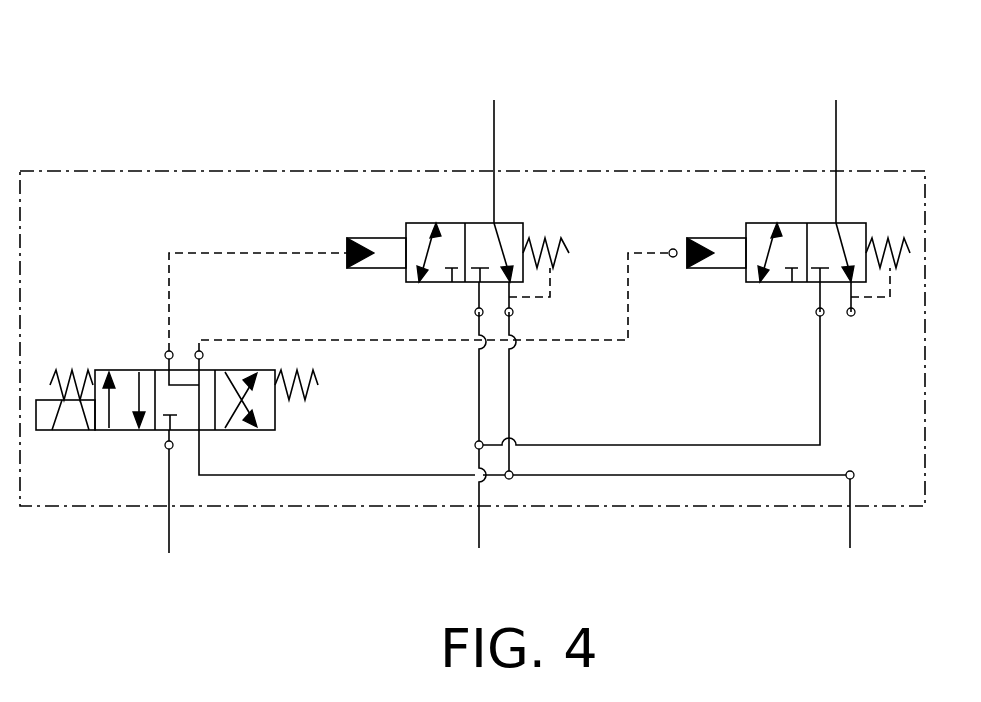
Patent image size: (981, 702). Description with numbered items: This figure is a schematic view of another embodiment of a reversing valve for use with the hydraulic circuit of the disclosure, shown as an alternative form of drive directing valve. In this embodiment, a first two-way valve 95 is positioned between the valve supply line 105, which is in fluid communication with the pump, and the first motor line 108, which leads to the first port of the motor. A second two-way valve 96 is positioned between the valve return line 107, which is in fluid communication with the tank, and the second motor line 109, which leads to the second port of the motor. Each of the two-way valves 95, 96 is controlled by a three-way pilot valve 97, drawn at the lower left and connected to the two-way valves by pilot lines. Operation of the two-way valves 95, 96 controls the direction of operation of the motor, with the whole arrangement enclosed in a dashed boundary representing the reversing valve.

The first two-way valve 95 is at (406, 223).
The second two-way valve 96 is at (746, 223).
The three-way pilot valve 97 is at (125, 430).
The valve supply line 105 is at (479, 518).
The valve return line 107 is at (850, 530).
The first motor line 108 is at (494, 127).
The second motor line 109 is at (836, 120).